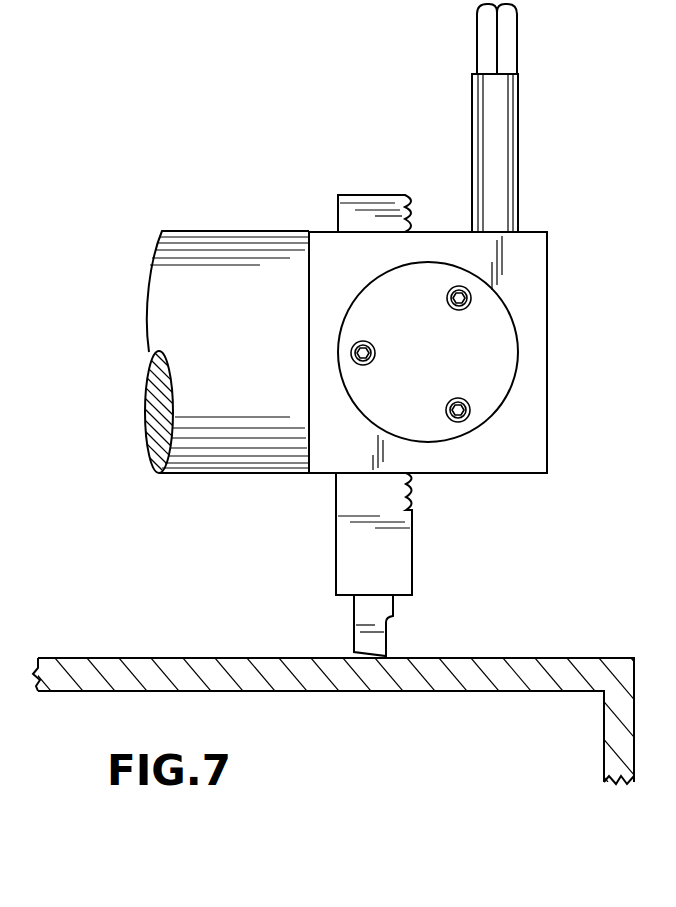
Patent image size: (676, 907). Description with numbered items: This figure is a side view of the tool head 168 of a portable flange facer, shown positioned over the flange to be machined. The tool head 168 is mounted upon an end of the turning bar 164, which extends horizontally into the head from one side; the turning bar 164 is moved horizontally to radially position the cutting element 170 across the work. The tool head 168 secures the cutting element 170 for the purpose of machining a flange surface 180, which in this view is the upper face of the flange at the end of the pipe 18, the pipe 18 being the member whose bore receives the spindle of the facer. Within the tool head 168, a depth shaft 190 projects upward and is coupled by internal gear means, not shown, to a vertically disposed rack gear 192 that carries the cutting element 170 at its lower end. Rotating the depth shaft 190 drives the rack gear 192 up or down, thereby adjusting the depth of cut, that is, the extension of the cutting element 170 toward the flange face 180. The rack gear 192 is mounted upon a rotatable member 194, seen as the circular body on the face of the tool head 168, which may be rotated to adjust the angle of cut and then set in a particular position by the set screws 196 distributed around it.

The pipe 18 is at (597, 746).
The turning bar 164 is at (262, 231).
The tool head 168 is at (556, 281).
The cutting element 170 is at (354, 623).
The flange surface 180 is at (190, 658).
The depth shaft 190 is at (520, 75).
The rack gear 192 is at (393, 195).
The rotatable member 194 is at (516, 382).
The set screws 196 is at (470, 415).